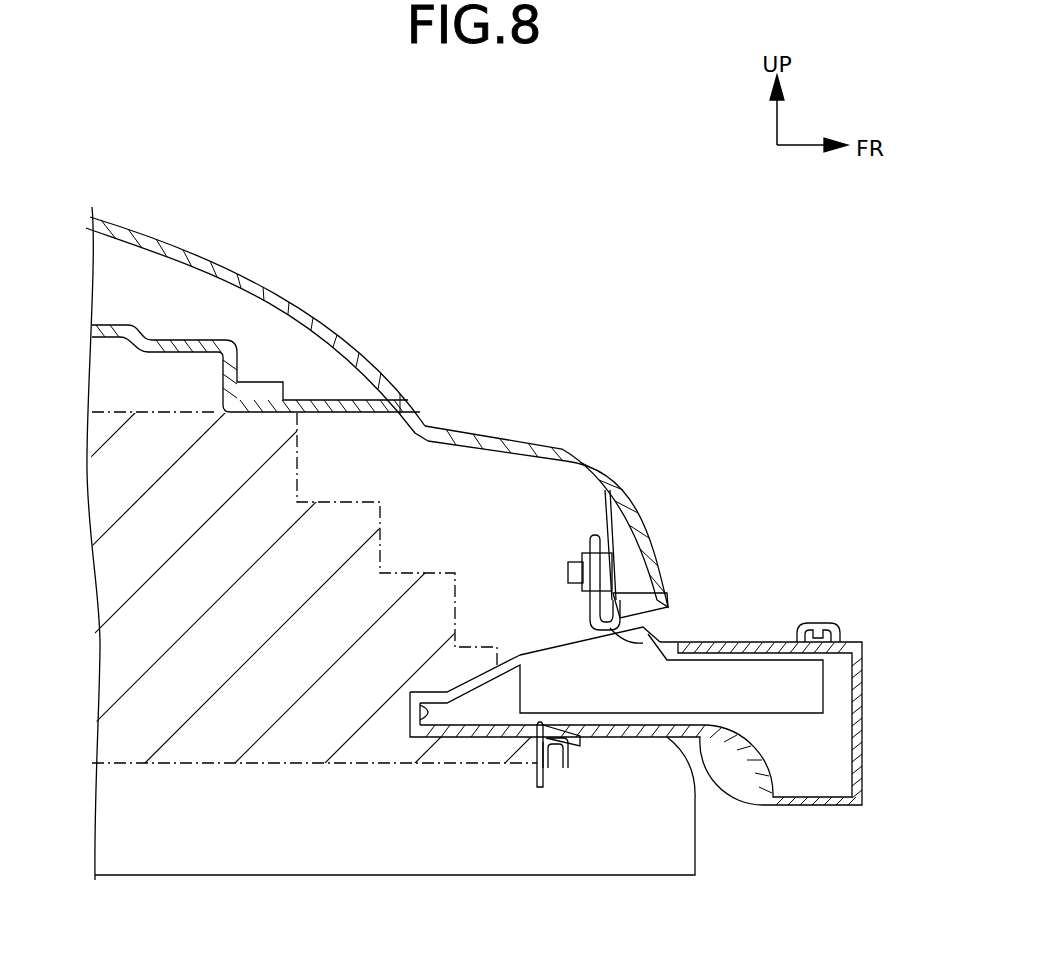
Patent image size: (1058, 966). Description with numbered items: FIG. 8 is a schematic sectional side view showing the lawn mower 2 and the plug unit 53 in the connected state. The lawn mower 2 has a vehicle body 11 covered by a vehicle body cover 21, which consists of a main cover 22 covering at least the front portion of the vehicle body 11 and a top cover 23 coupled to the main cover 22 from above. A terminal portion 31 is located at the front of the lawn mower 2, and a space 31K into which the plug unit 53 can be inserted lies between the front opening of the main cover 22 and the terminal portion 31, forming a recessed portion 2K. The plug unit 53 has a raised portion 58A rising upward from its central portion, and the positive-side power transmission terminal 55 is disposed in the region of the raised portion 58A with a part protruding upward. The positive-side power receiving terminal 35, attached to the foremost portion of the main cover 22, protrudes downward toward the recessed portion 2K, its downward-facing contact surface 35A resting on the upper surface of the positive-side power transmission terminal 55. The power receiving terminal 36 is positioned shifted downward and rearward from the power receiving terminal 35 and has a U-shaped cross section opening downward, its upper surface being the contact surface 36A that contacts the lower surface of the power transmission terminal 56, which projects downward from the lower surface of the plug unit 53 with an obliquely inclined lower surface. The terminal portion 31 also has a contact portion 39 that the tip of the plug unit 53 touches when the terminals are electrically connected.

The lawn mower 2 is at (633, 215).
The vehicle body 11 is at (86, 457).
The vehicle body cover 21 is at (366, 312).
The main cover 22 is at (440, 425).
The top cover 23 is at (390, 358).
The raised portion 58A is at (500, 645).
The positive-side power transmission terminal 55 is at (557, 620).
The positive-side power receiving terminal 35 is at (660, 597).
The contact surface 35A is at (643, 627).
The plug unit 53 is at (865, 625).
The terminal portion 31 is at (608, 831).
The space 31K is at (690, 748).
The contact portion 39 is at (412, 704).
The power receiving terminal 36 is at (548, 775).
The contact surface 36A is at (533, 728).
The power transmission terminal 56 is at (567, 752).
The recessed portion 2K is at (613, 762).